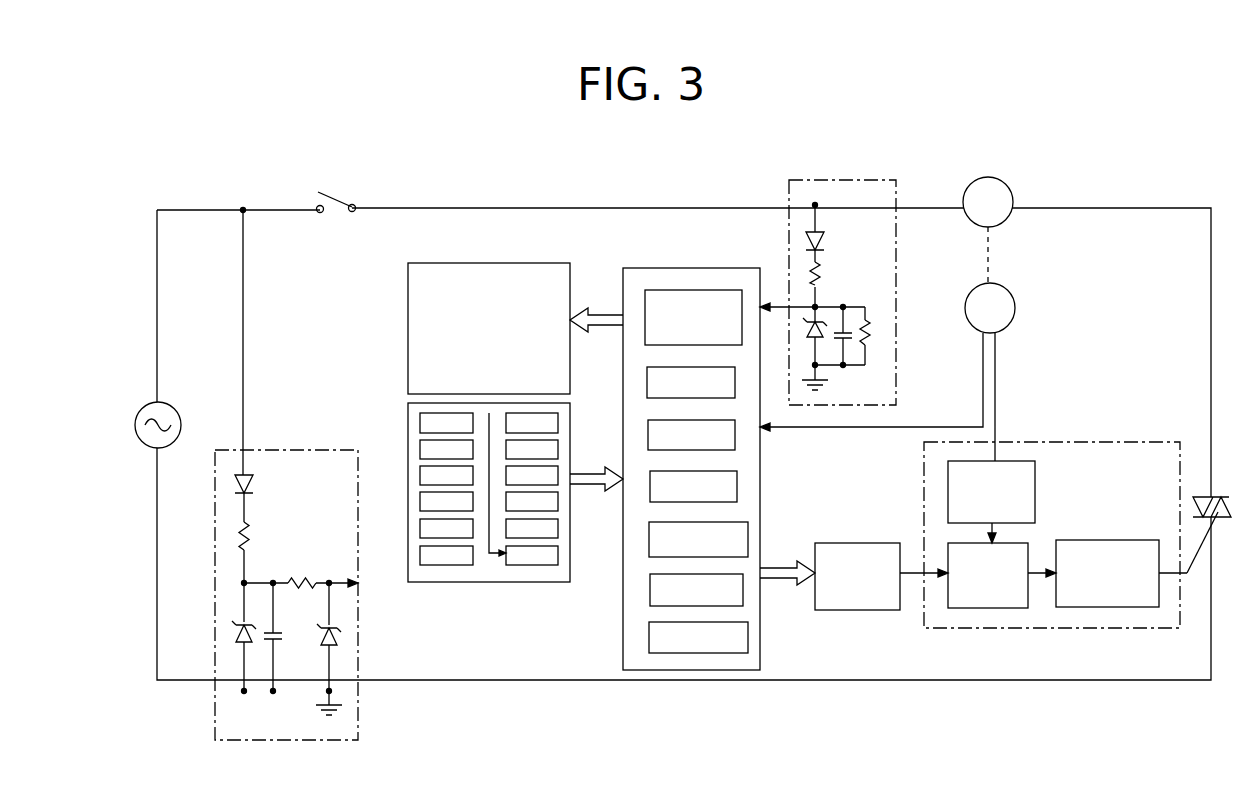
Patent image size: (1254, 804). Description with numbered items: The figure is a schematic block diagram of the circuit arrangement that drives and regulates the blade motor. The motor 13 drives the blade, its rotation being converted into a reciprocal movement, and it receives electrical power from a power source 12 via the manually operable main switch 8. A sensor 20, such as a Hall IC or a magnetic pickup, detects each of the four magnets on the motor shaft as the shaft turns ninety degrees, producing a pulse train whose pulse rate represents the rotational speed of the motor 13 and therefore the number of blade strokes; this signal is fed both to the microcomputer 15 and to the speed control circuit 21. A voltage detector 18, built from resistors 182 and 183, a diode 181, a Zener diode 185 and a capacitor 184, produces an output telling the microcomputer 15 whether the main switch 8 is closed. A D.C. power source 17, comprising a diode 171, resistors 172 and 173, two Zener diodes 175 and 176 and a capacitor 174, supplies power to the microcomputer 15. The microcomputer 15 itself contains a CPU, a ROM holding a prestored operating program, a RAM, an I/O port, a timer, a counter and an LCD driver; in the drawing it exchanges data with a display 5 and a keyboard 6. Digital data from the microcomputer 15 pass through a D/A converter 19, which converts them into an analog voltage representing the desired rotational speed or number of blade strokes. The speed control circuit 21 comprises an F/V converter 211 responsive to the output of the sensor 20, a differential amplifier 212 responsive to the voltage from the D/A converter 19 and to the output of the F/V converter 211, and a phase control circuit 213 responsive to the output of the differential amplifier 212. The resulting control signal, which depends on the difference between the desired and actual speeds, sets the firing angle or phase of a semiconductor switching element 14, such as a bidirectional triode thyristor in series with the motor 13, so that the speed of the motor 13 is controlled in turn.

The display 5 is at (470, 262).
The keyboard 6 is at (498, 583).
The main switch 8 is at (338, 197).
The power source 12 is at (138, 404).
The motor 13 is at (1010, 216).
The semiconductor switching element 14 is at (1218, 512).
The microcomputer 15 is at (665, 268).
The D.C. power source 17 is at (297, 475).
The voltage detector 18 is at (844, 279).
The D/A converter 19 is at (850, 611).
The sensor 20 is at (1015, 310).
The speed control circuit 21 is at (1031, 531).
The diode 171 is at (256, 489).
The resistor 172 is at (250, 541).
The resistor 173 is at (302, 590).
The capacitor 174 is at (280, 642).
The Zener diode 175 is at (232, 634).
The Zener diode 176 is at (340, 640).
The diode 181 is at (826, 243).
The resistor 182 is at (821, 280).
The resistor 183 is at (872, 336).
The capacitor 184 is at (850, 328).
The Zener diode 185 is at (818, 335).
The F/V converter 211 is at (947, 488).
The differential amplifier 212 is at (1003, 608).
The phase control circuit 213 is at (1090, 540).